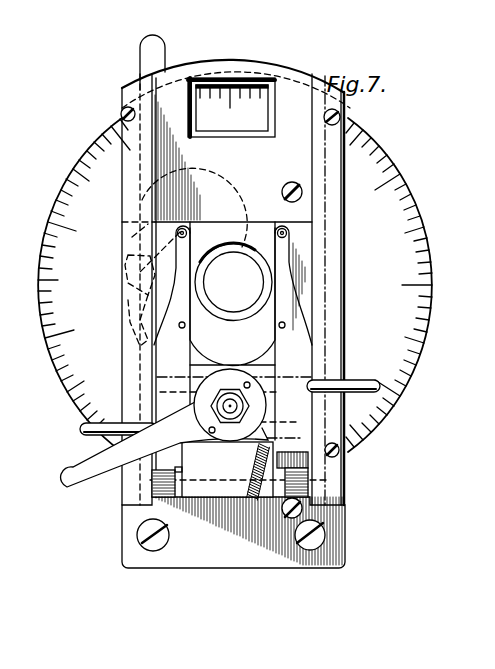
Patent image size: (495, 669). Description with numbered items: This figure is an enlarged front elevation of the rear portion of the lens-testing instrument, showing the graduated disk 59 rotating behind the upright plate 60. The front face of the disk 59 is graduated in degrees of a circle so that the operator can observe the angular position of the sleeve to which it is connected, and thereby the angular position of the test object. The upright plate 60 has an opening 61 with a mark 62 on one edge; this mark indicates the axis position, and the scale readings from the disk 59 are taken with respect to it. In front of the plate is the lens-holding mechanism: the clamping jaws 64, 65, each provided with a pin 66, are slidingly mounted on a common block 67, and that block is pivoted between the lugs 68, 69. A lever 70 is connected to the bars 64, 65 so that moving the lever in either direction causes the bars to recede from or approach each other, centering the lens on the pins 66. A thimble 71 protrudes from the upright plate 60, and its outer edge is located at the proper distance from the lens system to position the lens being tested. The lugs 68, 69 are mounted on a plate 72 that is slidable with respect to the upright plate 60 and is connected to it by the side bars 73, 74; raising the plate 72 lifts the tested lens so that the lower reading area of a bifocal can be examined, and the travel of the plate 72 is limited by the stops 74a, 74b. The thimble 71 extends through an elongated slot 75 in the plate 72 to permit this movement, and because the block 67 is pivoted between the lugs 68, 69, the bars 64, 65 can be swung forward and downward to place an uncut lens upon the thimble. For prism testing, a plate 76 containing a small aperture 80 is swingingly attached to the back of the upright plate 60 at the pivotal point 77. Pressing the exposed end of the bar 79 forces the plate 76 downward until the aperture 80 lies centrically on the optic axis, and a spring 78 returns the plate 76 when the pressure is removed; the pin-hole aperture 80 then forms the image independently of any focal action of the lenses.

The disk 59 is at (395, 362).
The upright plate 60 is at (290, 77).
The opening 61 is at (200, 77).
The mark 62 is at (240, 68).
The clamping jaw 64 is at (293, 353).
The clamping jaw 65 is at (163, 347).
The pin 66 is at (281, 227).
The block 67 is at (228, 488).
The lug 68 is at (160, 500).
The lug 69 is at (308, 478).
The lever 70 is at (72, 472).
The thimble 71 is at (233, 310).
The plate 72 is at (312, 223).
The side bar 73 is at (132, 237).
The side bar 74 is at (334, 256).
The stop 74a is at (288, 186).
The stop 74b is at (302, 512).
The elongated slot 75 is at (258, 316).
The plate 76 is at (208, 178).
The pivotal point 77 is at (128, 287).
The spring 78 is at (140, 305).
The bar 79 is at (140, 47).
The small aperture 80 is at (200, 207).